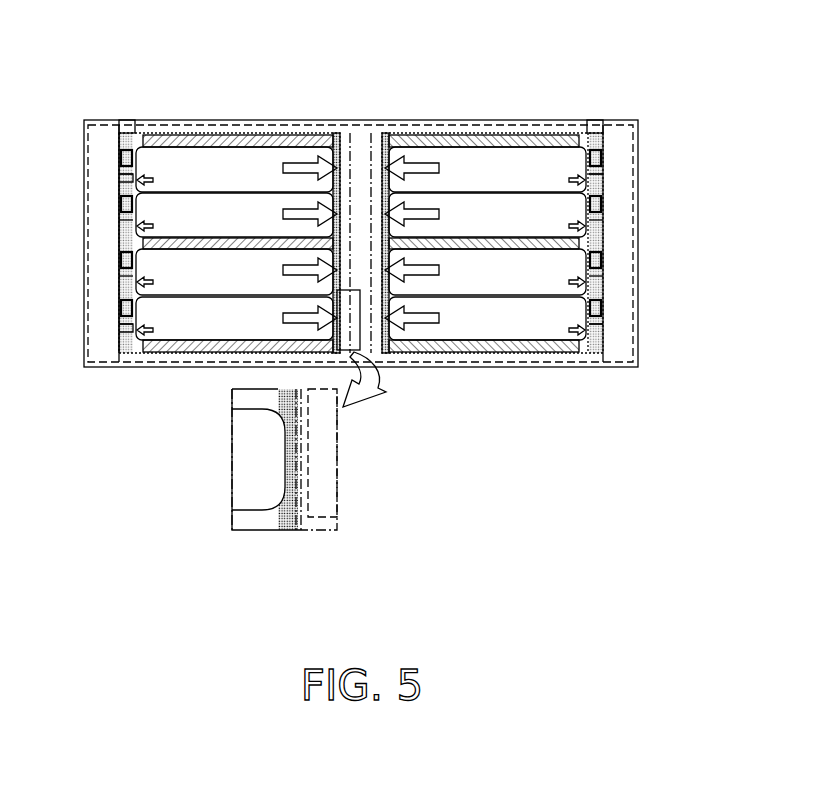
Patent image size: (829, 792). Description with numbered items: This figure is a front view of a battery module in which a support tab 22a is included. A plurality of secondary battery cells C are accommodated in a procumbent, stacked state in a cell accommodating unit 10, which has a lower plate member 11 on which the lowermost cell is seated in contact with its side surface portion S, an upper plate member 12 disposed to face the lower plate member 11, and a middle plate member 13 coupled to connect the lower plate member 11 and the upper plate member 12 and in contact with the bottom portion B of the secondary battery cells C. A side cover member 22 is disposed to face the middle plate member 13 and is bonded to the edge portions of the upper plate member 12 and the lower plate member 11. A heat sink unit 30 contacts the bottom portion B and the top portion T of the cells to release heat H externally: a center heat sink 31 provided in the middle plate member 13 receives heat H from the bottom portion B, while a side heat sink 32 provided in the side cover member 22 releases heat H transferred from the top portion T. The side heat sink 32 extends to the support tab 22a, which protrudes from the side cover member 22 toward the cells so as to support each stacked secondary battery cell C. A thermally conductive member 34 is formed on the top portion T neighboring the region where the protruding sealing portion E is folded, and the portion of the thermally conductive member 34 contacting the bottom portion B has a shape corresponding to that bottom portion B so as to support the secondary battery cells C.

The cell accommodating unit 10 is at (306, 346).
The lower plate member 11 is at (548, 360).
The upper plate member 12 is at (500, 132).
The middle plate member 13 is at (378, 243).
The side cover member 22 is at (638, 215).
The support tab 22a is at (590, 238).
The heat sink unit 30 is at (273, 274).
The center heat sink 31 is at (350, 303).
The side heat sink 32 is at (133, 118).
The thermally conductive member 34 is at (333, 192).
The heat H is at (408, 170).
The sealing portion E is at (120, 304).
The top portion T is at (120, 328).
The secondary battery cell C is at (146, 333).
The side surface portion S is at (185, 330).
The bottom portion B is at (337, 292).